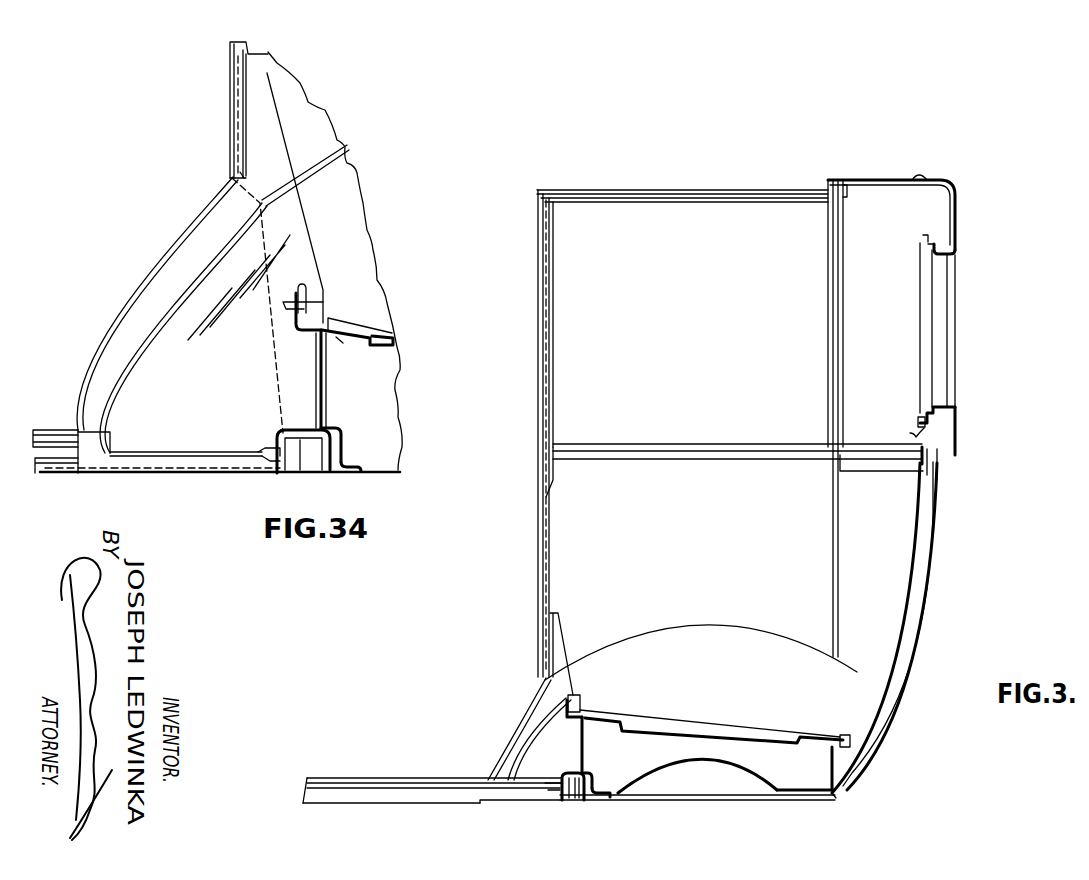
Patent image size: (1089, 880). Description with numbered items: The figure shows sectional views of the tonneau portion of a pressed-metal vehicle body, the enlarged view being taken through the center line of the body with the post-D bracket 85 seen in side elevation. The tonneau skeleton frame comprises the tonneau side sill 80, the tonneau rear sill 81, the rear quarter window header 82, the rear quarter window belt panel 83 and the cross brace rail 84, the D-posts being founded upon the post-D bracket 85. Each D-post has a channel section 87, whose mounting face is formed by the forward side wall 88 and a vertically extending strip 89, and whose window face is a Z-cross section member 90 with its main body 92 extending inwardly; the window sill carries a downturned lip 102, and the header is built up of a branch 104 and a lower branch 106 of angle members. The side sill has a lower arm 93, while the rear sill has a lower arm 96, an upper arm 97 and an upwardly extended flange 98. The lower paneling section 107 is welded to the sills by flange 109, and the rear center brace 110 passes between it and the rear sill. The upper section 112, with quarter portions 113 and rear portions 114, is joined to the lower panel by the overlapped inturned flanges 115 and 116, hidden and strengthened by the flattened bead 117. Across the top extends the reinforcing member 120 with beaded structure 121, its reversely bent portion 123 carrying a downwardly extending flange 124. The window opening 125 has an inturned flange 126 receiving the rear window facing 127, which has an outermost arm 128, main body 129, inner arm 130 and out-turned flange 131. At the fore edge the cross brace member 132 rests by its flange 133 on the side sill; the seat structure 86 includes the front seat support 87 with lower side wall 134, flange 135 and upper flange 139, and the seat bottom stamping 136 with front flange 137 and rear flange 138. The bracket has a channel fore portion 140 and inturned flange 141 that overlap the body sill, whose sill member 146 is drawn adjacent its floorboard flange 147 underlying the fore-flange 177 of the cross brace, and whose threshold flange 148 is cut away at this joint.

In FIG. 3, the tonneau side sill 80 is at (716, 775).
In FIG. 3, the tonneau rear sill 81 is at (865, 764).
In FIG. 3, the rear quarter window header 82 is at (680, 197).
In FIG. 3, the rear quarter window belt panel 83 is at (663, 452).
In FIG. 3, the cross brace rail 84 is at (970, 502).
In FIG. 34, the post D bracket 85 is at (193, 379).
In FIG. 3, the post D bracket 85 is at (540, 760).
In FIG. 3, the tonneau seat structure 86 is at (701, 655).
In FIG. 34, the front seat support 87 is at (316, 379).
In FIG. 3, the front seat support 87 is at (578, 742).
In FIG. 34, the forward side wall 88 is at (229, 96).
In FIG. 3, the forward side wall 88 is at (540, 525).
In FIG. 34, the vertically extending strip 89 is at (236, 121).
In FIG. 3, the vertically extending strip 89 is at (548, 544).
In FIG. 3, the Z-cross section member 90 is at (556, 376).
In FIG. 3, the main body of the Z-section 92 is at (552, 455).
In FIG. 34, the lower arm of side sill 93 is at (392, 478).
In FIG. 3, the lower arm of side sill 93 is at (679, 800).
In FIG. 3, the lower arm of rear sill 96 is at (718, 199).
In FIG. 3, the upper arm of rear sill 97 is at (868, 749).
In FIG. 3, the upwardly extended flange 98 is at (872, 728).
In FIG. 3, the downturned lip or flange 102 is at (726, 462).
In FIG. 3, the branch of depending angle member 104 is at (781, 194).
In FIG. 3, the lower branch of supplementary angle 106 is at (658, 203).
In FIG. 3, the lower section of tonneau paneling 107 is at (936, 556).
In FIG. 3, the flange 109 is at (834, 798).
In FIG. 3, the rear center brace 110 is at (913, 617).
In FIG. 3, the upper section of tonneau paneling 112 is at (956, 192).
In FIG. 3, the quarter portions 113 is at (863, 418).
In FIG. 3, the rear portions 114 is at (932, 241).
In FIG. 3, the inturned flange on lower panel 115 is at (930, 463).
In FIG. 3, the inturned flange on upper panel 116 is at (927, 457).
In FIG. 3, the flattened bead 117 is at (940, 468).
In FIG. 3, the top panel reinforcing and rear rail forming member 120 is at (885, 179).
In FIG. 3, the upwardly beaded structure 121 is at (922, 177).
In FIG. 3, the reversely bent portion 123 is at (835, 181).
In FIG. 3, the downwardly extending flange 124 is at (849, 190).
In FIG. 3, the window opening 125 is at (957, 276).
In FIG. 3, the inturned flange 126 is at (945, 249).
In FIG. 3, the rear window facing 127 is at (925, 320).
In FIG. 3, the outermost arm 128 is at (945, 405).
In FIG. 3, the main body of window facing 129 is at (922, 410).
In FIG. 3, the inner arm 130 is at (911, 434).
In FIG. 3, the out-turned flange 131 is at (918, 243).
In FIG. 34, the cross brace member 132 is at (302, 475).
In FIG. 3, the cross brace member 132 is at (575, 802).
In FIG. 34, the flange of cross brace 133 is at (350, 469).
In FIG. 3, the flange of cross brace 133 is at (611, 798).
In FIG. 3, the lower side wall 134 is at (589, 772).
In FIG. 34, the flange 135 is at (340, 440).
In FIG. 3, the flange 135 is at (597, 786).
In FIG. 34, the seat bottom stamping 136 is at (366, 333).
In FIG. 3, the seat bottom stamping 136 is at (611, 728).
In FIG. 34, the front flange of seat bottom 137 is at (320, 310).
In FIG. 3, the front flange of seat bottom 137 is at (583, 698).
In FIG. 3, the rear flange of seat bottom 138 is at (841, 740).
In FIG. 34, the upper flange of seat support 139 is at (338, 339).
In FIG. 3, the upper flange of seat support 139 is at (580, 727).
In FIG. 34, the channel section fore portion 140 is at (137, 325).
In FIG. 3, the channel section fore portion 140 is at (512, 724).
In FIG. 34, the inturned flange 141 is at (183, 482).
In FIG. 3, the inturned flange 141 is at (497, 802).
In FIG. 34, the sill member 146 is at (73, 476).
In FIG. 3, the sill member 146 is at (413, 795).
In FIG. 34, the floorboard flange 147 is at (42, 472).
In FIG. 3, the floorboard flange 147 is at (363, 792).
In FIG. 34, the threshold flange 148 is at (34, 414).
In FIG. 3, the threshold flange 148 is at (440, 778).
In FIG. 34, the fore-flange of cross brace 177 is at (270, 463).
In FIG. 3, the fore-flange of cross brace 177 is at (552, 792).